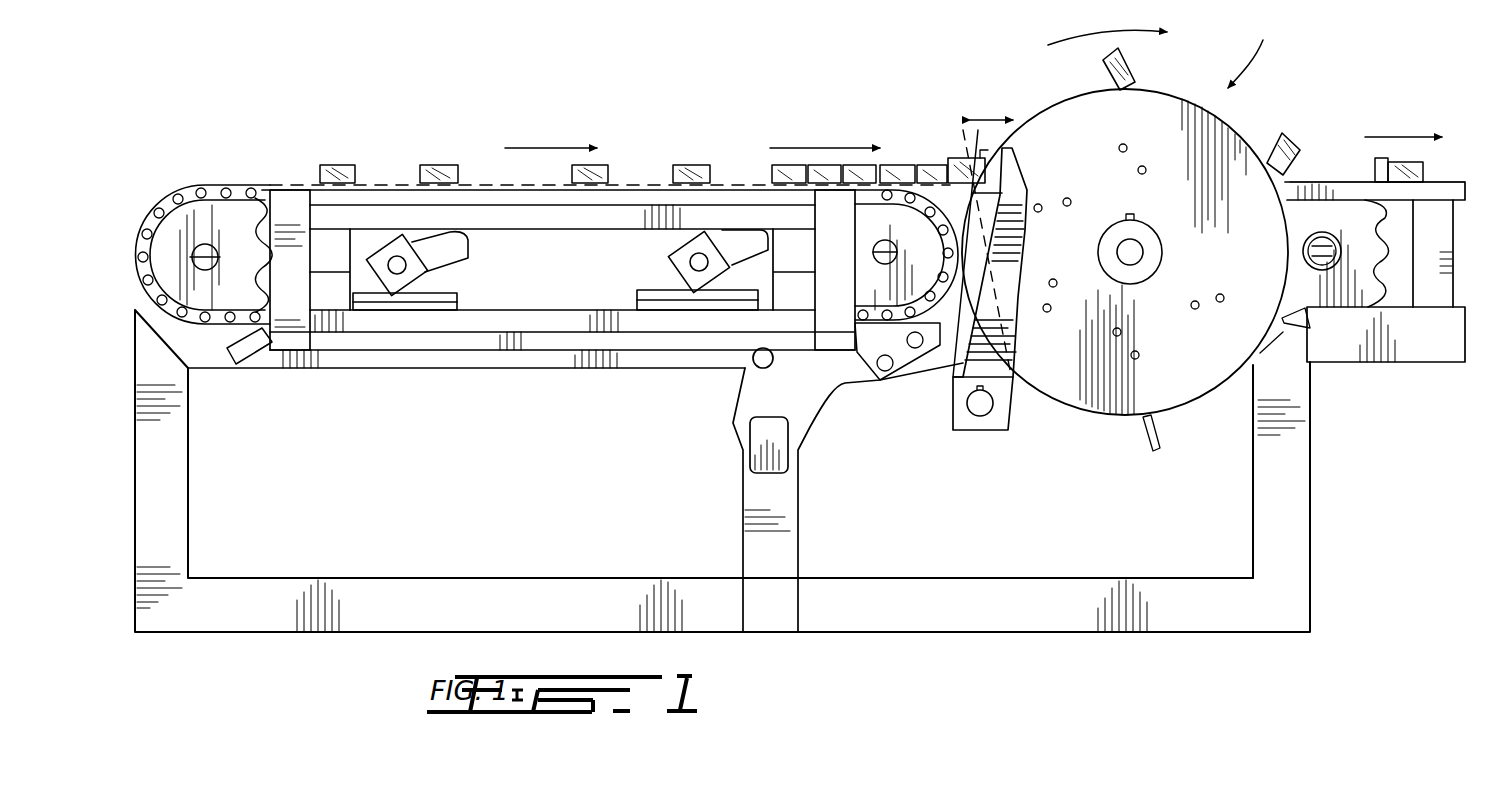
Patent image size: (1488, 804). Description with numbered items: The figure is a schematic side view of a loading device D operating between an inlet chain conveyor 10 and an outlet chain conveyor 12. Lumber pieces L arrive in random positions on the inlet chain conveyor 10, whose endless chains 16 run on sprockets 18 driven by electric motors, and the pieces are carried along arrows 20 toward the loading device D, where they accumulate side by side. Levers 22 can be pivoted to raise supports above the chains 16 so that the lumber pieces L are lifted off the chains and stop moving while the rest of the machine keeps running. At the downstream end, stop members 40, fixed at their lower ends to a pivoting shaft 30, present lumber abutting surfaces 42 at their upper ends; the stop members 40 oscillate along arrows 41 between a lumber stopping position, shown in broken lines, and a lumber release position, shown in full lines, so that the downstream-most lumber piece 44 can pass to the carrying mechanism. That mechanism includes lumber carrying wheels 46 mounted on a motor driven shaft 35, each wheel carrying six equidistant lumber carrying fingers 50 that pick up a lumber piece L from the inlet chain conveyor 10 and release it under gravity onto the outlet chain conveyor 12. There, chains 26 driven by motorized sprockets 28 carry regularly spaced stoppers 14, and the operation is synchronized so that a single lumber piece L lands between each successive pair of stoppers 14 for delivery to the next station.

The inlet chain conveyor 10 is at (487, 164).
The outlet chain conveyor 12 is at (1390, 337).
The stoppers 14 is at (1376, 168).
The endless chains 16 is at (222, 188).
The sprockets 18 is at (230, 290).
The arrows 20 is at (565, 148).
The levers 22 is at (436, 248).
The chains 26 is at (1433, 180).
The motorized sprockets 28 is at (1370, 258).
The shaft 30 is at (983, 410).
The motor driven shaft 35 is at (1136, 258).
The stop members 40 is at (1020, 234).
The arrows 41 is at (995, 118).
The lumber abutting surfaces 42 is at (1008, 147).
The downstream-most lumber piece 44 is at (962, 160).
The lumber carrying wheels 46 is at (1238, 398).
The lumber carrying fingers 50 is at (1003, 195).
The lumber pieces L is at (333, 163).
The loading device D is at (1163, 47).